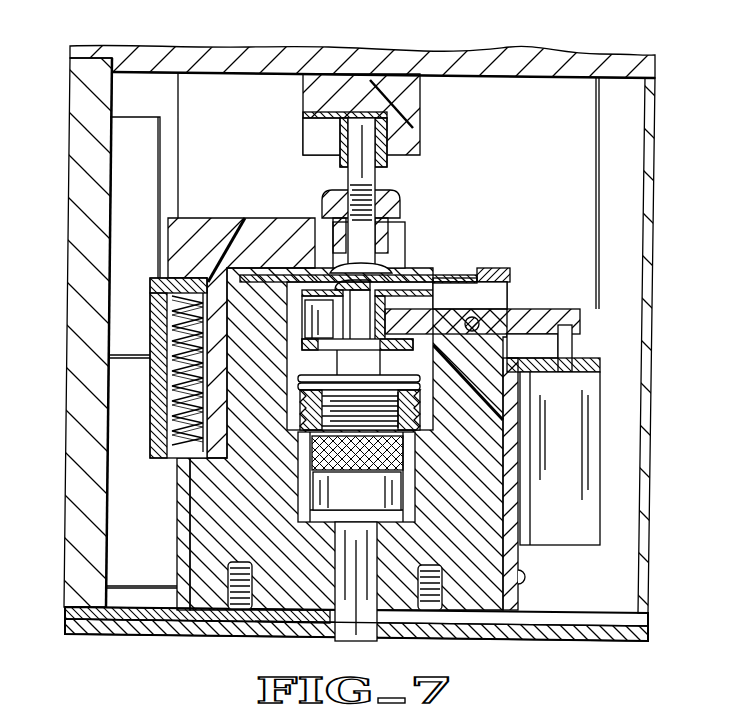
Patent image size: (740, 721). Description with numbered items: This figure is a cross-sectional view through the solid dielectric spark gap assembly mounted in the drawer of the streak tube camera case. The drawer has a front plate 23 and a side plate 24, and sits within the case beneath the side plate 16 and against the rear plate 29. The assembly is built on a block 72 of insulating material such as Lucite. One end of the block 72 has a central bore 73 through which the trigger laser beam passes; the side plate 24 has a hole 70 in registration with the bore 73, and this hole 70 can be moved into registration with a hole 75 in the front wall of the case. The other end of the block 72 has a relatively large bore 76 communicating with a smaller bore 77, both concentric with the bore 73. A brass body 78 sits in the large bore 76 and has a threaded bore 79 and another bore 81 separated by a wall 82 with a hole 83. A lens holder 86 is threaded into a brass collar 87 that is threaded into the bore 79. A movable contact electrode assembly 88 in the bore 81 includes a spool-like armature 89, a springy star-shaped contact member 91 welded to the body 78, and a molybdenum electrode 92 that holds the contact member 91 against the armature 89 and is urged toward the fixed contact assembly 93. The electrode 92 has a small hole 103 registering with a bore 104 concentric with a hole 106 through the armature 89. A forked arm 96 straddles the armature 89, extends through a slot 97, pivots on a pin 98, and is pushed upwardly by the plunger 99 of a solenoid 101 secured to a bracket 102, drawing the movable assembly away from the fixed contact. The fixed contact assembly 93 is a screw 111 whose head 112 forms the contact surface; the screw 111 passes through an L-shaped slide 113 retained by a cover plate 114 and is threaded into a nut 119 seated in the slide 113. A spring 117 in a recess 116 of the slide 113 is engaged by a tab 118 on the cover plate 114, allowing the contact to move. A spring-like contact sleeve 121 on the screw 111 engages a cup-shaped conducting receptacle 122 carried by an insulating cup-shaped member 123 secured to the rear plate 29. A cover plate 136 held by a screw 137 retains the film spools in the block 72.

The side plate 16 is at (654, 126).
The front plate 23 is at (88, 114).
The side plate 24 is at (170, 612).
The rear plate 29 is at (530, 62).
The hole 70 is at (355, 614).
The block 72 is at (475, 592).
The central bore 73 is at (347, 612).
The hole 75 is at (372, 612).
The large bore 76 is at (350, 352).
The smaller bore 77 is at (312, 494).
The body 78 is at (425, 356).
The threaded bore 79 is at (420, 390).
The bore 81 is at (305, 330).
The wall 82 is at (445, 368).
The hole 83 is at (305, 404).
The lens holder 86 is at (390, 492).
The brass collar 87 is at (418, 422).
The movable contact electrode assembly 88 is at (494, 281).
The spool-like armature 89 is at (470, 295).
The star-shaped contact member 91 is at (428, 293).
The electrode 92 is at (432, 281).
The fixed contact assembly 93 is at (312, 209).
The forked arm 96 is at (554, 322).
The slot 97 is at (497, 292).
The pin 98 is at (476, 314).
The plunger 99 is at (566, 352).
The solenoid 101 is at (575, 423).
The bracket 102 is at (593, 366).
The small hole 103 is at (372, 270).
The bore 104 is at (300, 283).
The hole 106 is at (320, 379).
The screw 111 is at (365, 178).
The head 112 is at (398, 238).
The L-shaped slide 113 is at (226, 235).
The cover plate 114 is at (158, 425).
The recess 116 is at (200, 318).
The spring 117 is at (165, 372).
The tab 118 is at (183, 284).
The nut 119 is at (340, 196).
The spring-like contact sleeve 121 is at (374, 130).
The contact receptacle 122 is at (338, 112).
The cup-shaped member 123 is at (318, 88).
The cover plate 136 is at (520, 546).
The screw 137 is at (522, 580).